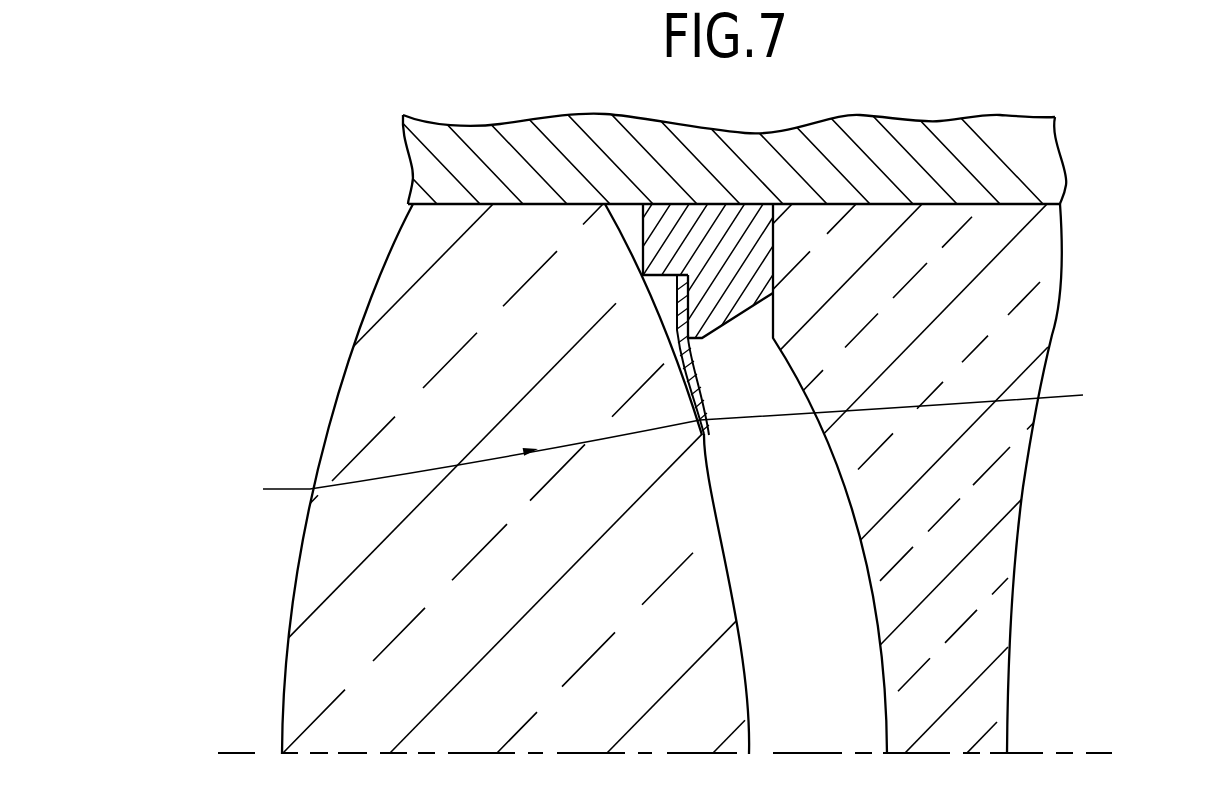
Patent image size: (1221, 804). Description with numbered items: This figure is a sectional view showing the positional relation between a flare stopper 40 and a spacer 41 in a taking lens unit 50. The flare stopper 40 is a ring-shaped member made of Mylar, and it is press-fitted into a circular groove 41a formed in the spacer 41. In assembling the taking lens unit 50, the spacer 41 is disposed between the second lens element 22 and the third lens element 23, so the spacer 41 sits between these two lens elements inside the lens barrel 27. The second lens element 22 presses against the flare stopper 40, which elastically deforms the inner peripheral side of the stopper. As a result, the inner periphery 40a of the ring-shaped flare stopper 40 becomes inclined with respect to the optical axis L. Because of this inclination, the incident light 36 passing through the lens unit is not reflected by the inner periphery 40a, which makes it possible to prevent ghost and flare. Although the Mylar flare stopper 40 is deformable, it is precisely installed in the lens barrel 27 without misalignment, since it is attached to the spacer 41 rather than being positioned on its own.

The second lens element 22 is at (367, 363).
The third lens element 23 is at (993, 627).
The lens barrel 27 is at (1034, 163).
The incident light 36 is at (287, 489).
The flare stopper 40 is at (705, 392).
The inner periphery 40a is at (707, 421).
The spacer 41 is at (663, 230).
The circular groove 41a is at (649, 277).
The taking lens unit 50 is at (390, 255).
The optical axis L is at (254, 753).